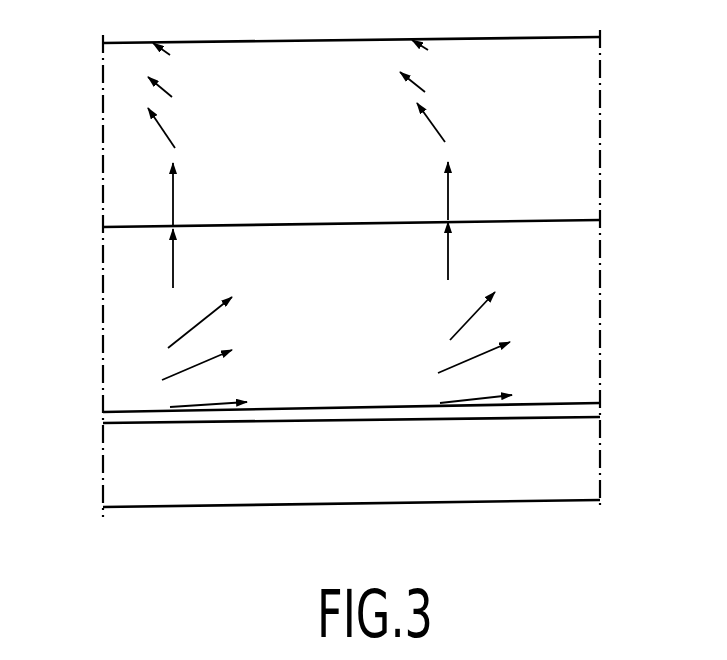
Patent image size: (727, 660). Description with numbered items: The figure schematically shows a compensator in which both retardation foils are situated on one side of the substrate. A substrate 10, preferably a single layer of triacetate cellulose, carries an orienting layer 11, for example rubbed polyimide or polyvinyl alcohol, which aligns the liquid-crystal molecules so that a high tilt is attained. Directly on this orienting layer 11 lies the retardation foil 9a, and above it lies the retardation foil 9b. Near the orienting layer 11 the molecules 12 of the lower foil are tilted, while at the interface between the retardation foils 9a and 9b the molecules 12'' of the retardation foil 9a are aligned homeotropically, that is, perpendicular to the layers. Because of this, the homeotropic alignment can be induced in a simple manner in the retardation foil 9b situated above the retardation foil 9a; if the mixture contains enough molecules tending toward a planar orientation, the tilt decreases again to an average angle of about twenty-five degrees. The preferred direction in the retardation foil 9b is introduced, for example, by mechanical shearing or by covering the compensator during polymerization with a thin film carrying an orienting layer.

The retardation foil 9a is at (577, 316).
The retardation foil 9b is at (567, 148).
The substrate 10 is at (128, 468).
The orienting layer 11 is at (322, 418).
The molecules 12 is at (341, 475).
The molecules 12'' is at (246, 255).